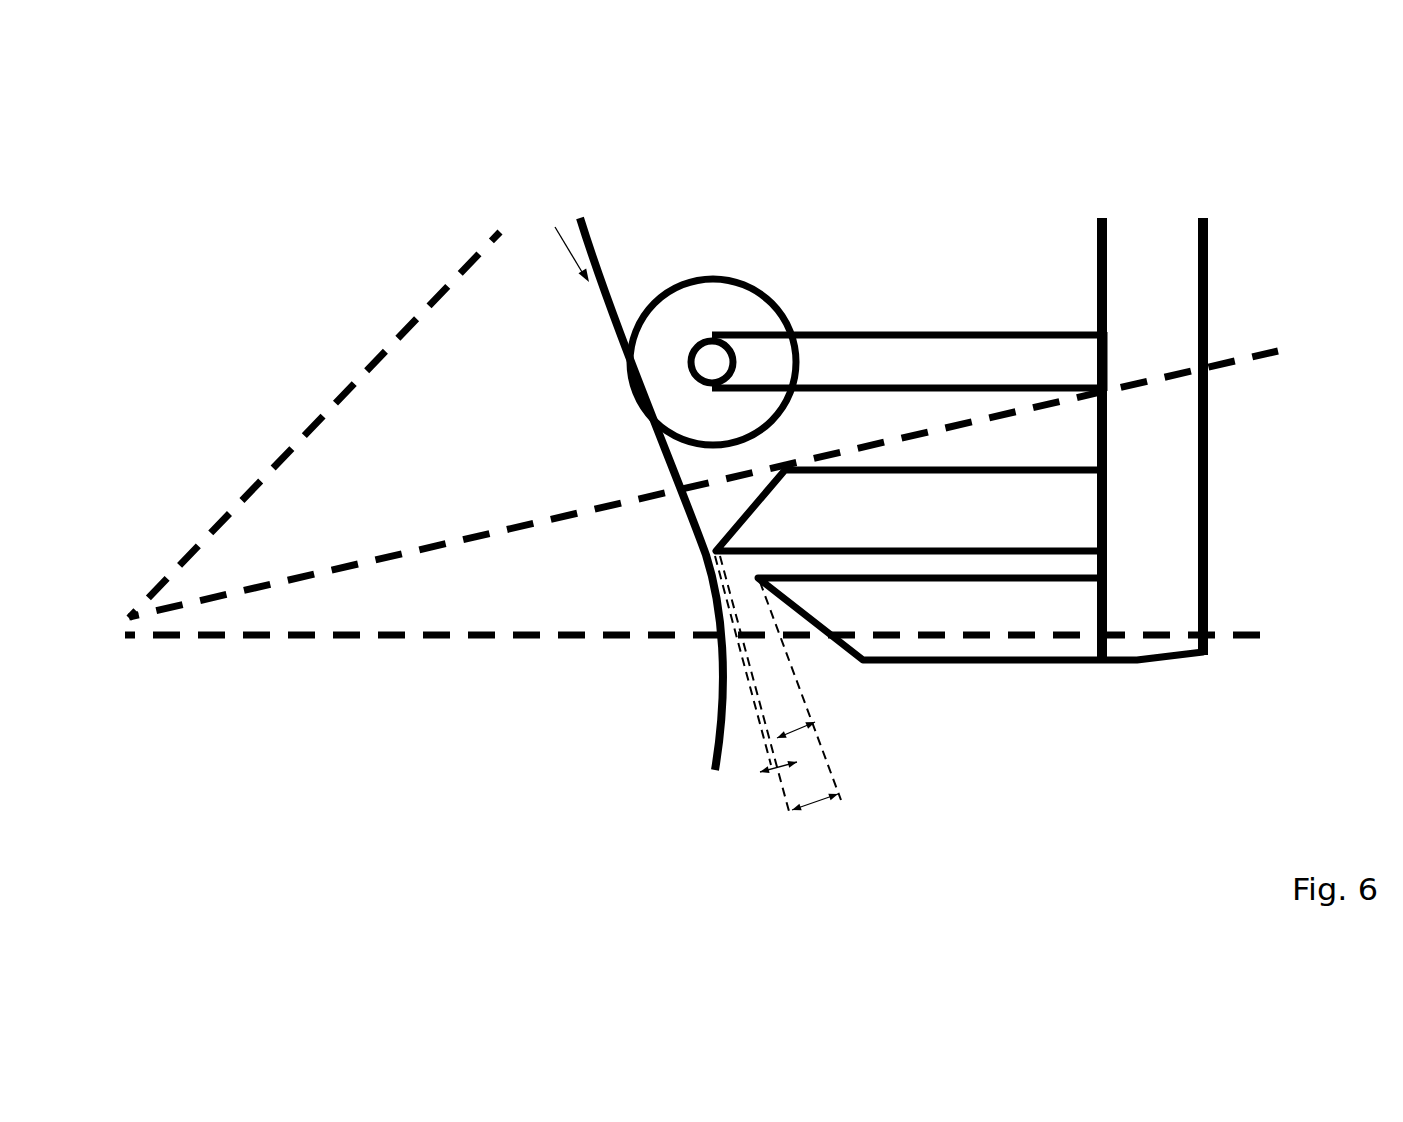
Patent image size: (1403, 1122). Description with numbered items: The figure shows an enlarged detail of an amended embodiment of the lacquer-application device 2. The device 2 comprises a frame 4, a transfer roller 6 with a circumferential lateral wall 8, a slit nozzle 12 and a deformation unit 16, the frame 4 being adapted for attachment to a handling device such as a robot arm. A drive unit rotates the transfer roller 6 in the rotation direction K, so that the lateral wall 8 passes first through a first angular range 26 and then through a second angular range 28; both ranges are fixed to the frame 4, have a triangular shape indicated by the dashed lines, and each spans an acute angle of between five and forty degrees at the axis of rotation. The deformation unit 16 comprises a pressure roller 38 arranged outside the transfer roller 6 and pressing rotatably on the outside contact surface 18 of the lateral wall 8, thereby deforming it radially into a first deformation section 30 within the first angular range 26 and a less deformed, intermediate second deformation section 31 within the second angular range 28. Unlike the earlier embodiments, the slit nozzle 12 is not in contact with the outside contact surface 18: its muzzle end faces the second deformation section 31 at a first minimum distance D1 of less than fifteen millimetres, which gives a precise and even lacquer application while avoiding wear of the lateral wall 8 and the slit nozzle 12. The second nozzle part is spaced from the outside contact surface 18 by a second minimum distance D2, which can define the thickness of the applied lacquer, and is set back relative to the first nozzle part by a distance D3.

The device 2 is at (946, 418).
The frame 4 is at (1160, 305).
The transfer roller 6 is at (637, 477).
The circumferential lateral wall 8 is at (637, 477).
The slit nozzle 12 is at (969, 695).
The deformation unit 16 is at (867, 286).
The outside contact surface 18 is at (606, 477).
The first angular range 26 is at (314, 425).
The second angular range 28 is at (701, 493).
The first deformation section 30 is at (614, 390).
The second deformation section 31 is at (668, 547).
The pressure roller 38 is at (808, 317).
The rotation direction K is at (561, 254).
The first minimum distance D1 is at (770, 779).
The second minimum distance D2 is at (820, 811).
The set-back distance D3 is at (826, 735).